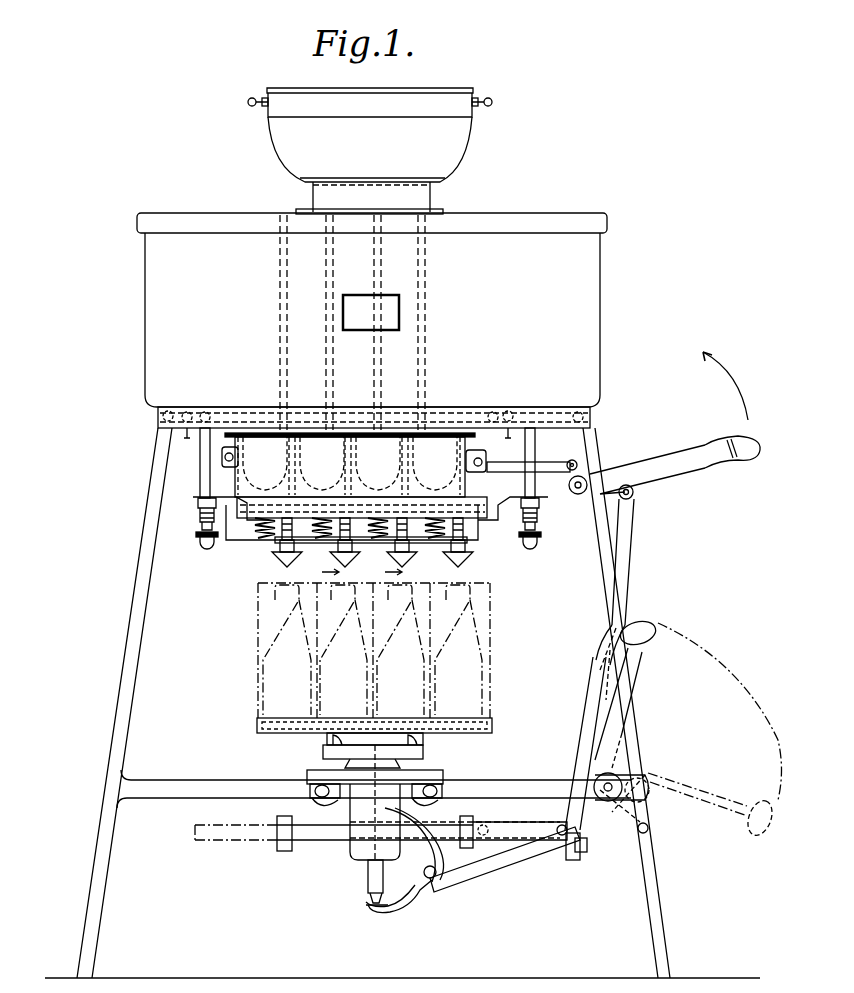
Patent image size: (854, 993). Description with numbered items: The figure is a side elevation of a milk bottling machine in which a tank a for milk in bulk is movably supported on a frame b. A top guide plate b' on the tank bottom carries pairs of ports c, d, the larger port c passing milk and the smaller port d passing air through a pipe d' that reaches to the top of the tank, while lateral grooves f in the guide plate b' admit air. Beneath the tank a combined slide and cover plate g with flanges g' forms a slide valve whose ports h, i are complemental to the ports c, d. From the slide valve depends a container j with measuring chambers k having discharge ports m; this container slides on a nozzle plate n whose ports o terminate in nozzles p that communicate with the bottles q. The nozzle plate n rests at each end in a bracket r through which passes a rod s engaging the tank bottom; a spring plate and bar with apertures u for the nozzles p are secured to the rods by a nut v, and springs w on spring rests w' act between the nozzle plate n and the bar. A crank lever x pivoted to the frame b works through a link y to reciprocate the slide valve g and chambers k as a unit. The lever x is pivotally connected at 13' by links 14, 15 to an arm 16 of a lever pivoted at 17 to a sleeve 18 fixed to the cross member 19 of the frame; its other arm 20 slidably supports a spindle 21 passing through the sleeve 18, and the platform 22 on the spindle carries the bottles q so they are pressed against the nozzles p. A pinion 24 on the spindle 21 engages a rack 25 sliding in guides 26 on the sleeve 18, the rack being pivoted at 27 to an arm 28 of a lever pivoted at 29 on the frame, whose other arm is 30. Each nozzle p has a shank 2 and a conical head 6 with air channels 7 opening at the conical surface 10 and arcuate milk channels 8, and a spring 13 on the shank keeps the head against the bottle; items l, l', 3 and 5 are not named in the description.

The tank a is at (152, 378).
The frame b is at (402, 703).
The top guide plate b' is at (347, 417).
The port c is at (258, 428).
The port d is at (370, 389).
The pipe d' is at (352, 322).
The lateral groove f is at (352, 355).
The combined slide and cover plate g is at (231, 401).
The flange g' is at (473, 402).
The port h is at (404, 360).
The port i is at (448, 400).
The container j is at (349, 435).
The measuring chamber k is at (363, 466).
The port m is at (262, 462).
The nozzle plate n is at (258, 520).
The port o is at (350, 520).
The nozzle p is at (255, 578).
The bottle q is at (480, 705).
The bracket r is at (200, 500).
The rod s is at (200, 457).
The aperture u is at (445, 550).
The nut v is at (536, 548).
The spring w is at (277, 556).
The spring rest w' is at (372, 647).
The crank lever x is at (682, 462).
The link y is at (566, 470).
The nozzle l is at (330, 558).
The nozzle l' is at (393, 559).
The shank 2 is at (300, 548).
The valve stem 3 is at (418, 522).
The spring carrier 5 is at (462, 530).
The conical head 6 is at (352, 548).
The orifice 7 is at (452, 555).
The arcuate channel 8 is at (475, 547).
The external conical surface 10 is at (440, 512).
The spring 13 is at (528, 501).
The pivotal connection 13' is at (588, 859).
The link 14 is at (624, 558).
The link 15 is at (593, 688).
The arm 16 is at (535, 862).
The pivot 17 is at (428, 885).
The sleeve 18 is at (352, 848).
The cross member 19 is at (174, 790).
The arm 20 is at (396, 912).
The spindle 21 is at (368, 880).
The platform 22 is at (476, 740).
The pinion 24 is at (392, 830).
The rack 25 is at (298, 826).
The guide 26 is at (285, 852).
The pivotal attachment 27 is at (650, 830).
The arm 28 is at (640, 810).
The pivot 29 is at (622, 782).
The arm 30 is at (628, 668).